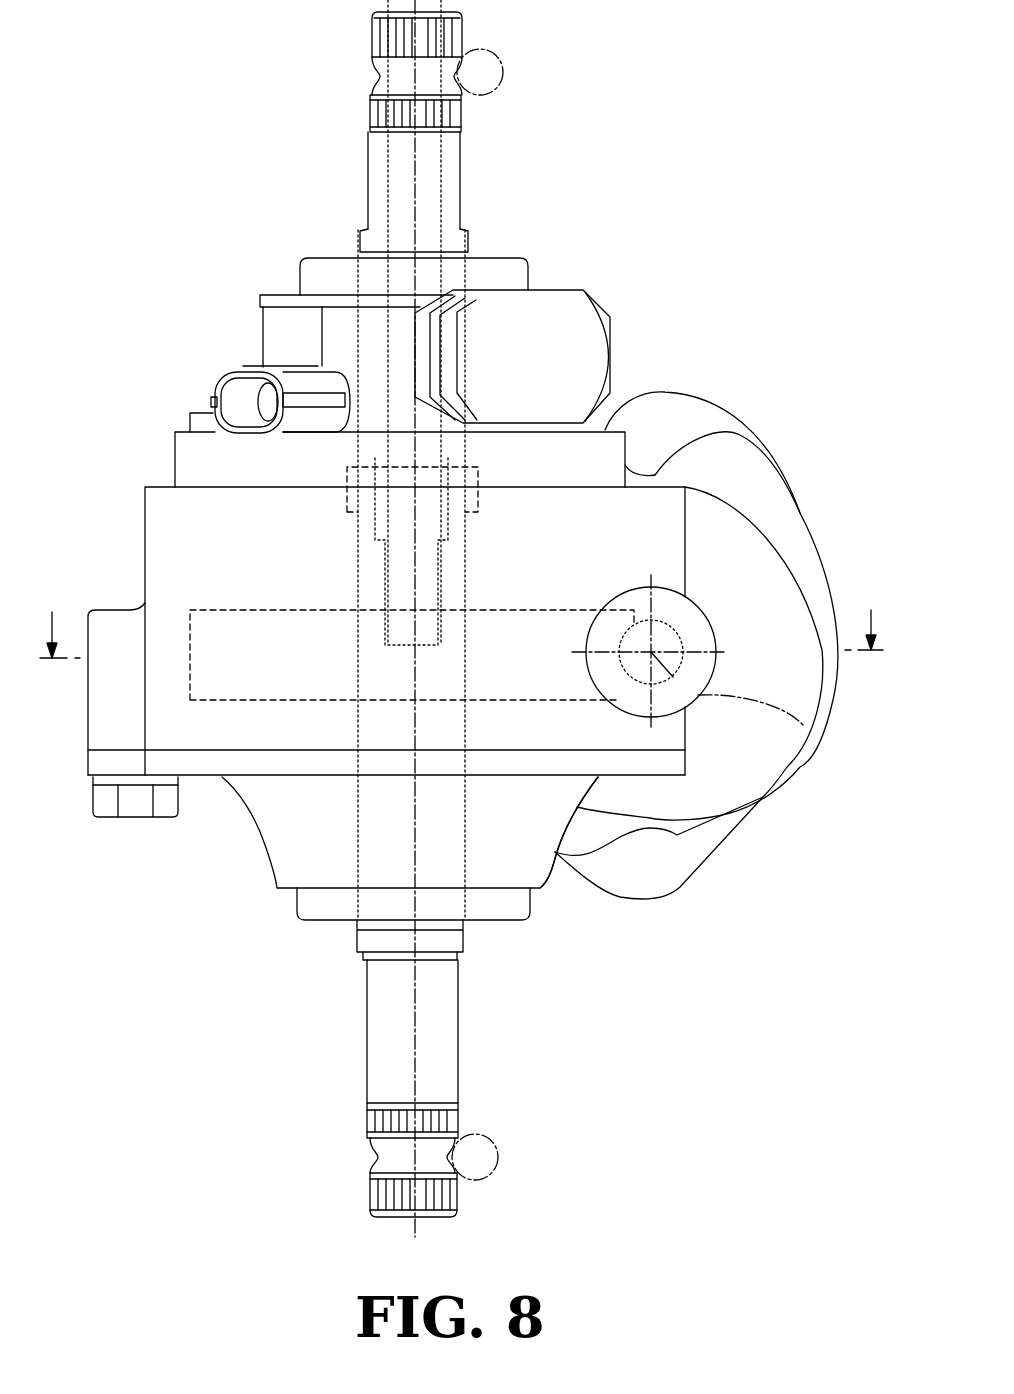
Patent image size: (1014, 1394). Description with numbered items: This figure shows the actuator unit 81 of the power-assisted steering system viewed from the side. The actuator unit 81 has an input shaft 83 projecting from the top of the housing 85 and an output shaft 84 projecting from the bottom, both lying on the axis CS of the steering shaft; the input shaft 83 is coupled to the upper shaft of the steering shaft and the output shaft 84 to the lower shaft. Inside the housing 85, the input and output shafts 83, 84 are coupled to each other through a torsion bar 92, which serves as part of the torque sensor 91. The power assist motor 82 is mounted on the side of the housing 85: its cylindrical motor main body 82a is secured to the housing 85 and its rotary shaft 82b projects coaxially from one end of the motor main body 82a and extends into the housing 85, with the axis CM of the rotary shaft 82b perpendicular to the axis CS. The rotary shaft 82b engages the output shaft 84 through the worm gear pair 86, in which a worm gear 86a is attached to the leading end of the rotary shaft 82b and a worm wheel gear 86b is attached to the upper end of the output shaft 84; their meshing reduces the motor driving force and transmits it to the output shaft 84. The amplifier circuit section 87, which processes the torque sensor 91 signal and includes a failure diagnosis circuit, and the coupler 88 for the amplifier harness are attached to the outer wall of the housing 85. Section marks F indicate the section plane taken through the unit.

The actuator unit 81 is at (644, 234).
The input shaft 83 is at (460, 160).
The torsion bar 92 is at (443, 190).
The torque sensor 91 is at (504, 322).
The amplifier circuit section 87 is at (568, 330).
The housing 85 is at (652, 490).
The coupler 88 is at (230, 377).
The power assist motor 82 is at (722, 632).
The motor main body 82a is at (787, 497).
The rotary shaft 82b is at (697, 613).
The axis of the rotary shaft CM is at (803, 725).
The section line F is at (461, 620).
The worm gear pair 86 is at (646, 847).
The worm gear 86a is at (637, 700).
The worm wheel gear 86b is at (530, 700).
The axis of the steering shaft CS is at (415, 1000).
The output shaft 84 is at (458, 1073).